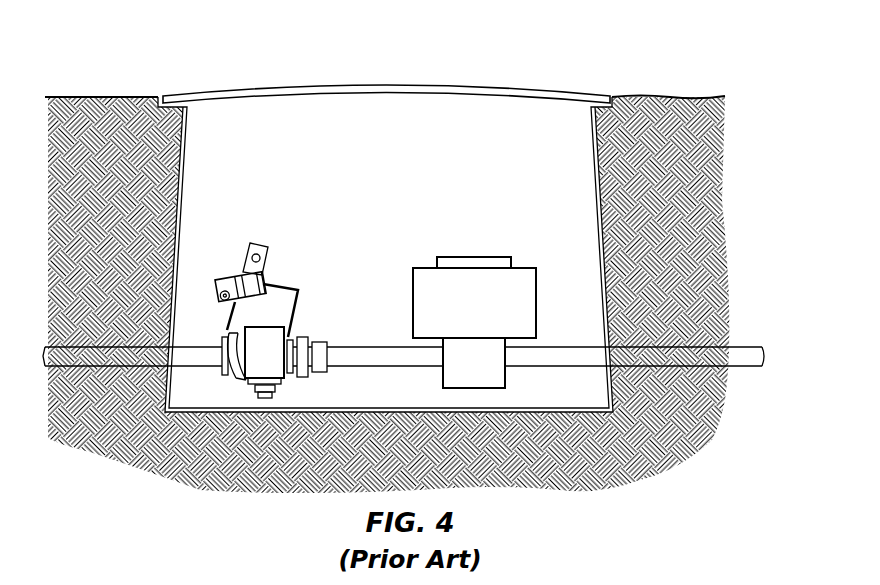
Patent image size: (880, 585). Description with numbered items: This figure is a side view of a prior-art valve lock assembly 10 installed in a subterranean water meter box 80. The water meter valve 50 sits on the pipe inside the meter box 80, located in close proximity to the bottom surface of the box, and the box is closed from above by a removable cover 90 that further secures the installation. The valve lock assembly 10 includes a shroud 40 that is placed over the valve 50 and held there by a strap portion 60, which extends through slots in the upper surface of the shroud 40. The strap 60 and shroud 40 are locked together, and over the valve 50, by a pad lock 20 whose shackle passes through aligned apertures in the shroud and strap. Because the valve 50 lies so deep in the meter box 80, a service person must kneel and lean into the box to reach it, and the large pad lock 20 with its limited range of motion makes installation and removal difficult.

The valve lock assembly 10 is at (260, 297).
The pad lock 20 is at (224, 281).
The shroud 40 is at (280, 292).
The water meter valve 50 is at (284, 380).
The strap portion 60 is at (233, 377).
The water meter box 80 is at (392, 119).
The removable cover 90 is at (548, 93).